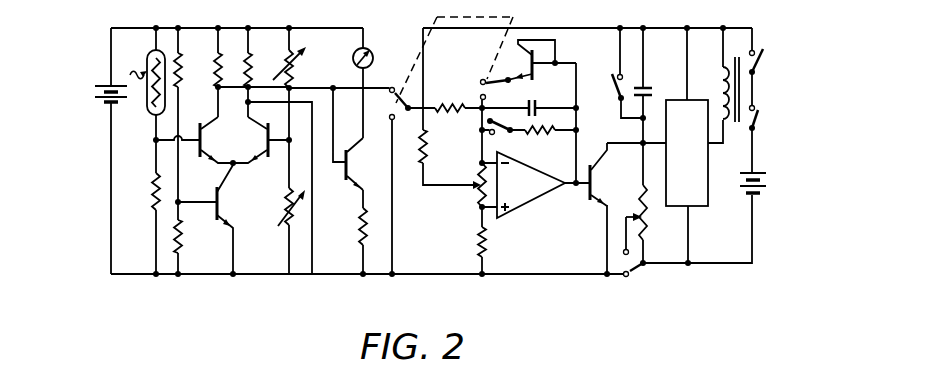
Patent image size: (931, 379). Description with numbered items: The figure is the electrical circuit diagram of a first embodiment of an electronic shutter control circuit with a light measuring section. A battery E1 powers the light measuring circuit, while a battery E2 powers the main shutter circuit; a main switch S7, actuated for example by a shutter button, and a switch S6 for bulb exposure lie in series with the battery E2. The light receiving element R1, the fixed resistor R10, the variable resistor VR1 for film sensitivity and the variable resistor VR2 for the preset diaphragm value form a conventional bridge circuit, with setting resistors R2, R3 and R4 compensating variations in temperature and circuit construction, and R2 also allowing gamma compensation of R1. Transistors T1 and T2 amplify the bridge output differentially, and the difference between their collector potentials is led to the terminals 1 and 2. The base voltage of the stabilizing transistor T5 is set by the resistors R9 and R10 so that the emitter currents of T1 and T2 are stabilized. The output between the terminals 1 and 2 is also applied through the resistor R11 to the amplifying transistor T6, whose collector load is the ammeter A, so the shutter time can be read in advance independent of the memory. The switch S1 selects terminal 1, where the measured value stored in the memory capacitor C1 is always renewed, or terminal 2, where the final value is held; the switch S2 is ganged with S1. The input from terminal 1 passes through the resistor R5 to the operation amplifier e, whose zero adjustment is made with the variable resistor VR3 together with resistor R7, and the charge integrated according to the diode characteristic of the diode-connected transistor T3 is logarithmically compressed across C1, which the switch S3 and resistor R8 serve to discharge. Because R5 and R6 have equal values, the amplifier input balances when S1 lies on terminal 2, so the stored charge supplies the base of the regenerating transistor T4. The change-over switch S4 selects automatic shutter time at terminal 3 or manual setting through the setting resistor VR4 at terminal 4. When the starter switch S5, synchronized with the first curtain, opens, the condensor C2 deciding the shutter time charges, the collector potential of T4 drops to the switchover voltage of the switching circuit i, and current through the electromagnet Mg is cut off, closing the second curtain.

The battery E1 is at (97, 101).
The light receiving element R1 is at (147, 81).
The resistance R9 is at (189, 75).
The setting resistor R3 is at (208, 64).
The setting resistor R4 is at (259, 64).
The variable resistor VR1 is at (303, 67).
The ammeter A is at (368, 46).
The terminal 1 is at (393, 73).
The terminal 2 is at (379, 123).
The switch S1 is at (404, 112).
The resistor R5 is at (450, 121).
The resistance R7 is at (450, 159).
The switch S2 is at (488, 76).
The diode connected transistor T3 is at (526, 60).
The memory capacitor C1 is at (546, 98).
The switch S3 is at (507, 140).
The resistance R8 is at (541, 145).
The operation amplifier e is at (531, 193).
The transistor T1 is at (194, 140).
The transistor T2 is at (261, 140).
The transistor T5 is at (215, 219).
The amplifying transistor T6 is at (357, 139).
The setting resistor R2 is at (143, 193).
The fixed resistor R10 is at (194, 237).
The variable resistor VR2 is at (281, 207).
The resistance R11 is at (379, 227).
The variable resistor VR3 is at (463, 192).
The resistor R6 is at (494, 243).
The transistor T4 is at (605, 174).
The starter switch S5 is at (606, 90).
The condensor C2 is at (653, 83).
The switching circuit i is at (693, 168).
The electromagnet Mg is at (717, 89).
The main switch S7 is at (768, 65).
The switch S6 is at (765, 122).
The battery E2 is at (762, 193).
The setting resistor VR4 is at (656, 212).
The change-over switch S4 is at (641, 275).
The terminal 4 is at (616, 242).
The terminal 3 is at (623, 293).